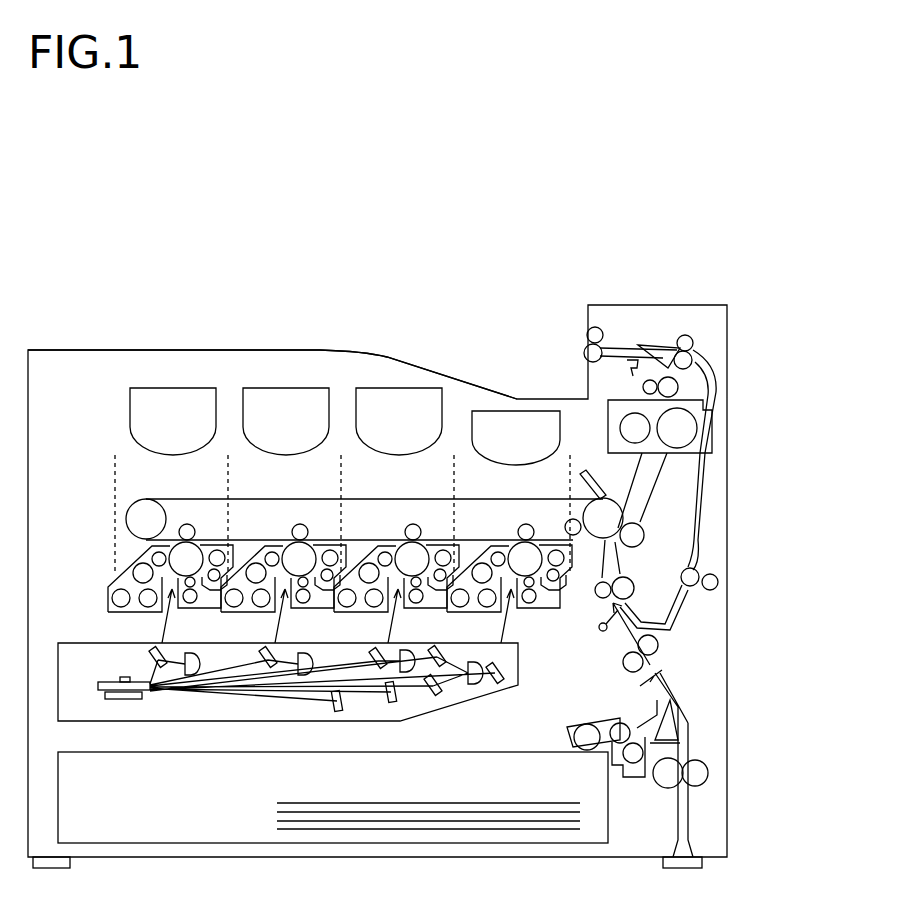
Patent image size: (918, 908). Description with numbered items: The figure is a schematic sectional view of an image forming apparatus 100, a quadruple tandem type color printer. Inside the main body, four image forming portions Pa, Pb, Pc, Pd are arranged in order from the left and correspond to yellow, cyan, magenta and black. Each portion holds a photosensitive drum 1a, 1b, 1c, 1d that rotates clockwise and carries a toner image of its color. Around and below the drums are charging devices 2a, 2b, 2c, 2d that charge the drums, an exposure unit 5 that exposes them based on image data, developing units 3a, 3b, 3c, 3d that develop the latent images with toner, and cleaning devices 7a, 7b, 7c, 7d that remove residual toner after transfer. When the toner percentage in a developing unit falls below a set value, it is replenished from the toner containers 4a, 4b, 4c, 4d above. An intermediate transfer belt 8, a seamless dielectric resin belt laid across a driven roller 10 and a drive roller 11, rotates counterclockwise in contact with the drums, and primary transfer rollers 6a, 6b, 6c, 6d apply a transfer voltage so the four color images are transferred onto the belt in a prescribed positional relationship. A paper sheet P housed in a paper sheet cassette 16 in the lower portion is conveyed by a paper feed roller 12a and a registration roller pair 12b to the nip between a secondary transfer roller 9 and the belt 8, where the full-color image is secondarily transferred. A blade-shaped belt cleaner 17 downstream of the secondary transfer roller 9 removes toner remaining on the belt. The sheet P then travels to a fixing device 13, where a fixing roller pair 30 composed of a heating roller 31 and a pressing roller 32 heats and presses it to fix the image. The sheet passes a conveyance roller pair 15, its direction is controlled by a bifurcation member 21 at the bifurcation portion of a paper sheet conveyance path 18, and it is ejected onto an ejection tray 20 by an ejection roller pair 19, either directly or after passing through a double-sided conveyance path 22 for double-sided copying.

The image forming apparatus 100 is at (194, 323).
The ejection tray 20 is at (420, 362).
The intermediate transfer belt 8 is at (165, 499).
The driven roller 10 is at (140, 517).
The drive roller 11 is at (598, 498).
The belt cleaner 17 is at (583, 470).
The toner container 4a is at (173, 421).
The toner container 4b is at (286, 421).
The toner container 4c is at (399, 421).
The toner container 4d is at (516, 438).
The image forming portion Pa is at (118, 480).
The image forming portion Pb is at (287, 481).
The image forming portion Pc is at (400, 481).
The image forming portion Pd is at (513, 481).
The photosensitive drum 1a is at (186, 559).
The photosensitive drum 1b is at (299, 559).
The photosensitive drum 1c is at (412, 559).
The photosensitive drum 1d is at (525, 559).
The primary transfer roller 6a is at (191, 530).
The primary transfer roller 6b is at (316, 519).
The primary transfer roller 6c is at (429, 519).
The primary transfer roller 6d is at (542, 519).
The developing unit 3a is at (100, 587).
The developing unit 3b is at (254, 557).
The developing unit 3c is at (367, 557).
The developing unit 3d is at (478, 557).
The cleaning device 7a is at (220, 592).
The cleaning device 7b is at (334, 593).
The cleaning device 7c is at (447, 593).
The cleaning device 7d is at (559, 580).
The charging device 2a is at (186, 600).
The charging device 2b is at (315, 609).
The charging device 2c is at (428, 609).
The charging device 2d is at (541, 609).
The exposure unit 5 is at (85, 643).
The paper sheet cassette 16 is at (67, 751).
The paper sheet P is at (352, 803).
The paper feed roller 12a is at (585, 735).
The registration roller pair 12b is at (600, 622).
The secondary transfer roller 9 is at (637, 543).
The paper sheet conveyance path 18 is at (642, 492).
The fixing device 13 is at (692, 427).
The pressing roller 32 is at (643, 440).
The heating roller 31 is at (676, 446).
The fixing roller pair 30 is at (772, 445).
The conveyance roller pair 15 is at (680, 389).
The ejection roller pair 19 is at (588, 337).
The bifurcation member 21 is at (694, 344).
The double-sided conveyance path 22 is at (700, 515).